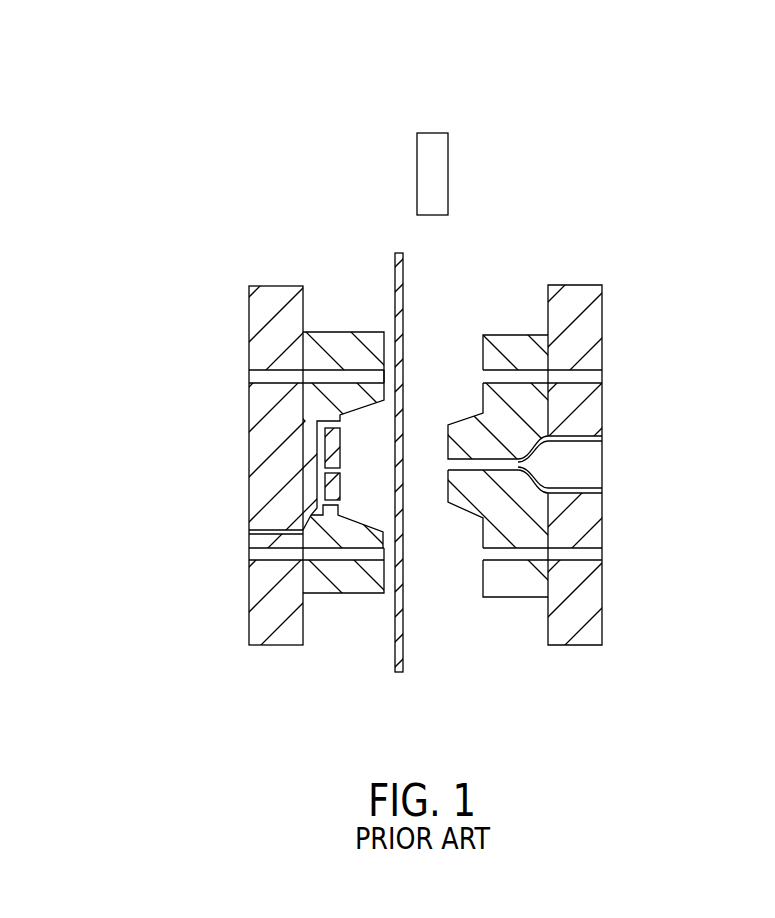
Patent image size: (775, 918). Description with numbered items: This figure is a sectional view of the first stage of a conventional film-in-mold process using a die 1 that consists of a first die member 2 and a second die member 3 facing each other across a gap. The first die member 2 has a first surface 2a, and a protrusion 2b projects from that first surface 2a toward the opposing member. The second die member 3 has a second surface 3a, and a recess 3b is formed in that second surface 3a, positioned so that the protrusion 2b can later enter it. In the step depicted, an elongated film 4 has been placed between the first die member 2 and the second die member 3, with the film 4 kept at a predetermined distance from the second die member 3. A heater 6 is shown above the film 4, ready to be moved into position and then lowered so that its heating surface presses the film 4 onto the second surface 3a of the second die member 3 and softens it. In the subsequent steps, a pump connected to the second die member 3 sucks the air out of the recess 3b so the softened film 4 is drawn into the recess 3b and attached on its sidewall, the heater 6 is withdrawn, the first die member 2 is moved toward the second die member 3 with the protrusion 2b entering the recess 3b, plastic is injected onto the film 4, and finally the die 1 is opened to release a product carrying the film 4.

The die 1 is at (534, 687).
The first die member 2 is at (603, 403).
The first surface 2a is at (481, 354).
The protrusion 2b is at (447, 488).
The second die member 3 is at (250, 412).
The second surface 3a is at (387, 580).
The recess 3b is at (340, 418).
The film 4 is at (403, 302).
The heater 6 is at (432, 143).